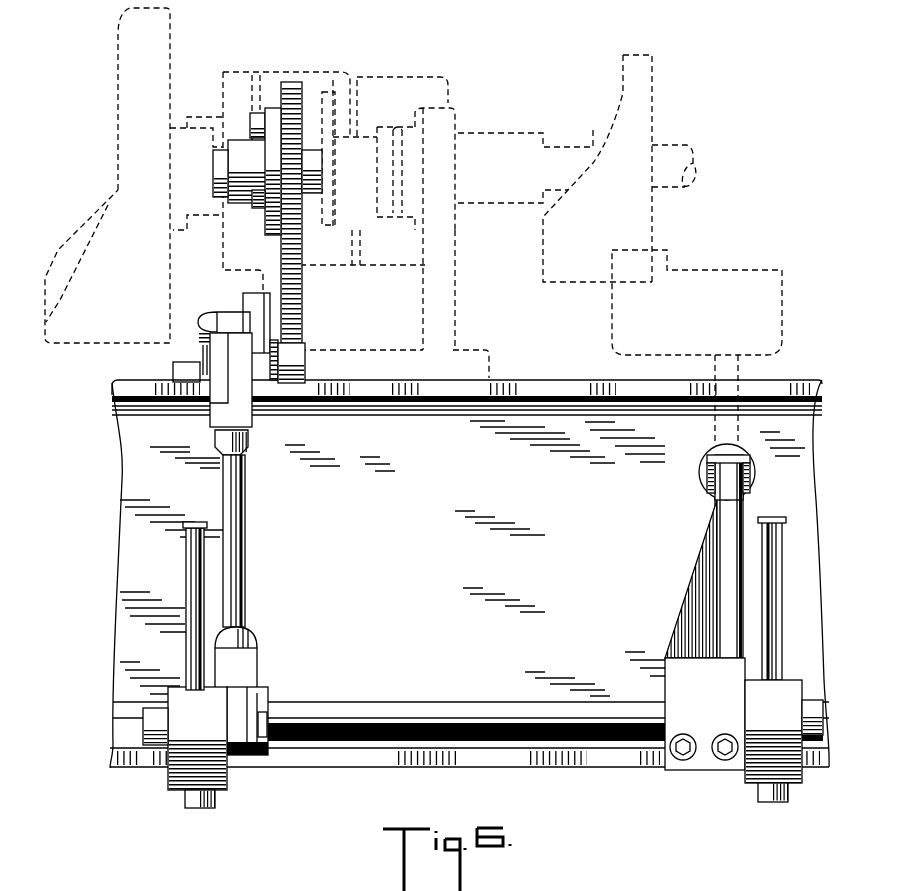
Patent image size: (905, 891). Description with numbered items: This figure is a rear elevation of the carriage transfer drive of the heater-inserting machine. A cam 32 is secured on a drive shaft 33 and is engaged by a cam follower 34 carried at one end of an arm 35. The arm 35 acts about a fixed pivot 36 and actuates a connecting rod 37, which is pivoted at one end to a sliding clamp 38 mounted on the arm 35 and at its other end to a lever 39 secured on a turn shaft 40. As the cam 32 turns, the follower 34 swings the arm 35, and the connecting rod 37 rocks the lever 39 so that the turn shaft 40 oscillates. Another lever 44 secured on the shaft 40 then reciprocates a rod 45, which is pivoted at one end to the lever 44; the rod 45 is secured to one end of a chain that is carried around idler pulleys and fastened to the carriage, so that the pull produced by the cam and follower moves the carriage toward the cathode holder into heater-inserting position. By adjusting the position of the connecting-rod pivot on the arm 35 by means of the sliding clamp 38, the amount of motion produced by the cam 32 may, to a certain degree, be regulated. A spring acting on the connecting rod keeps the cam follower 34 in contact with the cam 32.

The cam 32 is at (303, 293).
The drive shaft 33 is at (317, 197).
The cam follower 34 is at (297, 385).
The arm 35 is at (258, 318).
The fixed pivot 36 is at (198, 318).
The connecting rod 37 is at (247, 492).
The sliding clamp 38 is at (240, 347).
The lever 39 is at (238, 728).
The turn shaft 40 is at (440, 712).
The lever 44 is at (678, 610).
The rod 45 is at (708, 467).